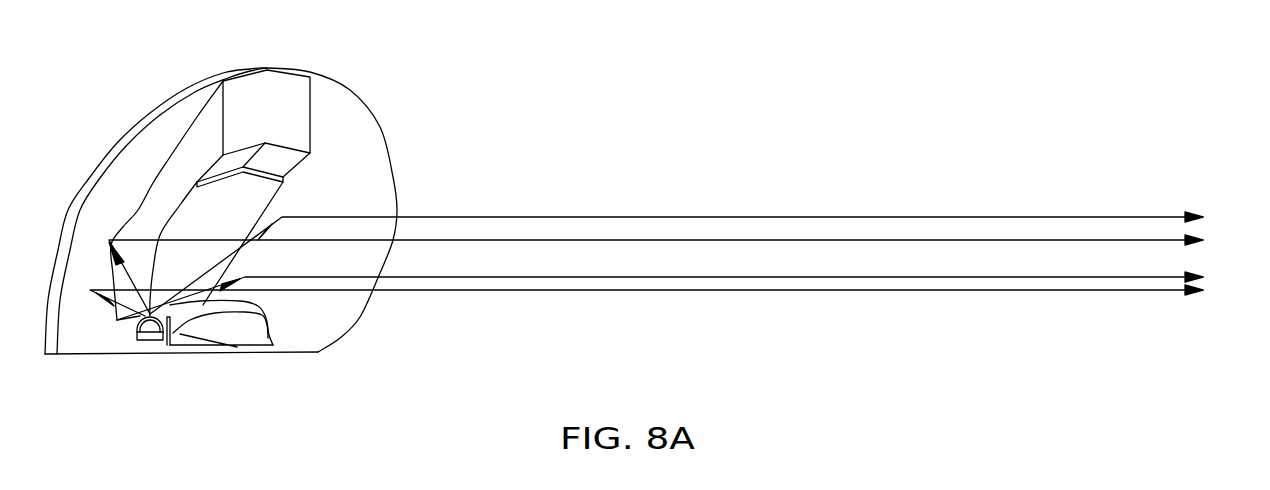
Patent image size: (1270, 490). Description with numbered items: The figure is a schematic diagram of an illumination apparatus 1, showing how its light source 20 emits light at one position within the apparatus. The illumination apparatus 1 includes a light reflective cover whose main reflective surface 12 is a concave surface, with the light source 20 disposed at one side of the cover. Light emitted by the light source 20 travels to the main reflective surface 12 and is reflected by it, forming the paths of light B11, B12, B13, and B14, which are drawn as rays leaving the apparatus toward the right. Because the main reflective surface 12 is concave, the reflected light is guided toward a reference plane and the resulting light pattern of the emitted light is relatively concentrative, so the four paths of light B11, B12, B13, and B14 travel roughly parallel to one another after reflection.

The illumination apparatus 1 is at (108, 68).
The main reflective surface 12 is at (340, 110).
The light source 20 is at (147, 342).
The path of light B11 is at (670, 300).
The path of light B12 is at (683, 292).
The path of light B13 is at (679, 271).
The path of light B14 is at (700, 259).